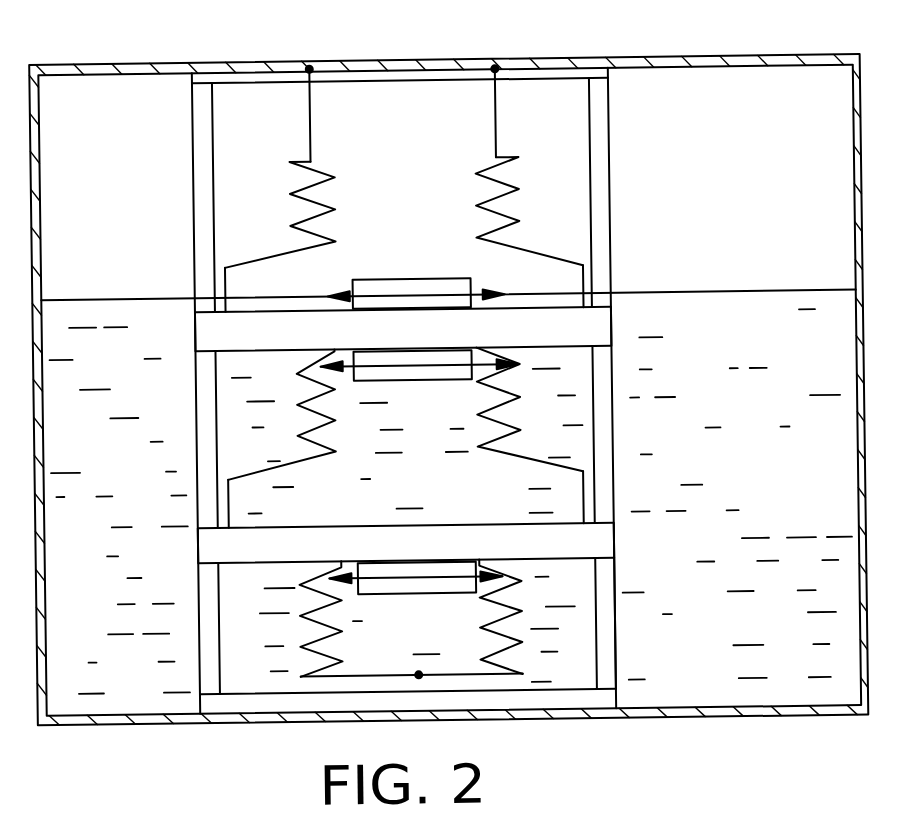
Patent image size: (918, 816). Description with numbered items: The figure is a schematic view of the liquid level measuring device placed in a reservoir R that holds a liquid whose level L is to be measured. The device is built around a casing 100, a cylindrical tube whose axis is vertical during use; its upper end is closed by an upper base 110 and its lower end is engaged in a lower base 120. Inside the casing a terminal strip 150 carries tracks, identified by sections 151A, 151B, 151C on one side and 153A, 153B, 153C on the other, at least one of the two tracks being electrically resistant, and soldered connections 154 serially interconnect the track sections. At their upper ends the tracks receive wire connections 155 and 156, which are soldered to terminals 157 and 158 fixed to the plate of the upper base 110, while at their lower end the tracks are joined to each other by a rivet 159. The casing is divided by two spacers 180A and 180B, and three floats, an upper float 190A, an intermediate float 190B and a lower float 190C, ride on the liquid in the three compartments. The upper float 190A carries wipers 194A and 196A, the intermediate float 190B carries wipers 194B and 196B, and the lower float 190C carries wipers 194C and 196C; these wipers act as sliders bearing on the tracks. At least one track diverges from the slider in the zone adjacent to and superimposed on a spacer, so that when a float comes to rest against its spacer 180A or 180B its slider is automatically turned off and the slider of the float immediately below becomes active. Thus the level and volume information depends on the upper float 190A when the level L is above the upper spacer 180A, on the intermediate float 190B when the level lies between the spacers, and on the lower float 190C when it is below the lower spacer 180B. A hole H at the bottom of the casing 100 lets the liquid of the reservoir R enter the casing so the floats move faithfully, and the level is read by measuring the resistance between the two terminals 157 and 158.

The casing 100 is at (615, 222).
The upper base 110 is at (402, 75).
The lower base 120 is at (584, 699).
The terminal strip 150 is at (238, 142).
The track 151A is at (350, 163).
The track 151B is at (293, 400).
The track 151C is at (297, 615).
The track 153A is at (552, 186).
The track 153B is at (522, 401).
The track 153C is at (518, 586).
The soldered connection 154 is at (216, 280).
The wire connection 155 is at (312, 116).
The wire connection 156 is at (502, 111).
The terminal 157 is at (313, 66).
The terminal 158 is at (500, 68).
The rivet 159 is at (415, 676).
The upper spacer 180A is at (560, 318).
The lower spacer 180B is at (561, 534).
The upper float 190A is at (463, 293).
The intermediate float 190B is at (424, 360).
The lower float 190C is at (436, 585).
The wiper 194A is at (407, 274).
The wiper 196A is at (407, 292).
The wiper 194B is at (412, 401).
The wiper 196B is at (390, 380).
The wiper 194C is at (427, 539).
The wiper 196C is at (404, 576).
The reservoir R is at (852, 157).
The level L is at (781, 267).
The hole H is at (640, 667).